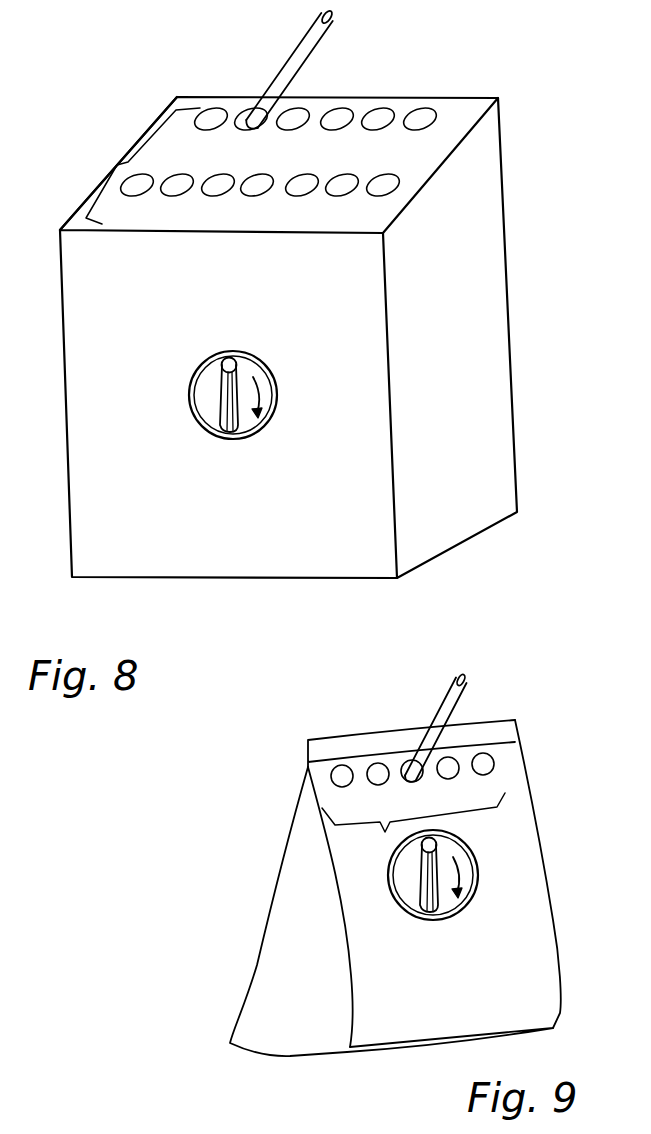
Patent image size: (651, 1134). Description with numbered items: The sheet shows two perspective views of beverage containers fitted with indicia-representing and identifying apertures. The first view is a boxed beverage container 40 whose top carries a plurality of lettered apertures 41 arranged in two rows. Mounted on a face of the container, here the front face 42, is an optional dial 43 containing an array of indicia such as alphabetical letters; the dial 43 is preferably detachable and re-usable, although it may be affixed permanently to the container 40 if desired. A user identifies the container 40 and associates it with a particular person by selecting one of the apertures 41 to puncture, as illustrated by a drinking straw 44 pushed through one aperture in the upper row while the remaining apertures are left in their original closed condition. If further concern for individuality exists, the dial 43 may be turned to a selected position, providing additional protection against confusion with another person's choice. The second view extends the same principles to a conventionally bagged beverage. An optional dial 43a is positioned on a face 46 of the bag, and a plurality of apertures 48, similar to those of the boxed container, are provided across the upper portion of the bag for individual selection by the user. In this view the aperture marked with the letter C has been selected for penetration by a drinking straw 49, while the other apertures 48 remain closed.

In FIG. 8, the boxed beverage container 40 is at (495, 395).
In FIG. 8, the indicia-representing and identifying apertures 41 is at (120, 163).
In FIG. 8, the front face 42 is at (293, 271).
In FIG. 8, the dial 43 is at (274, 410).
In FIG. 8, the drinking straw 44 is at (298, 56).
In FIG. 9, the face of the bag 46 is at (548, 970).
In FIG. 9, the apertures 48 is at (383, 832).
In FIG. 9, the drinking straw 49 is at (445, 704).
In FIG. 9, the dial 43a is at (470, 890).